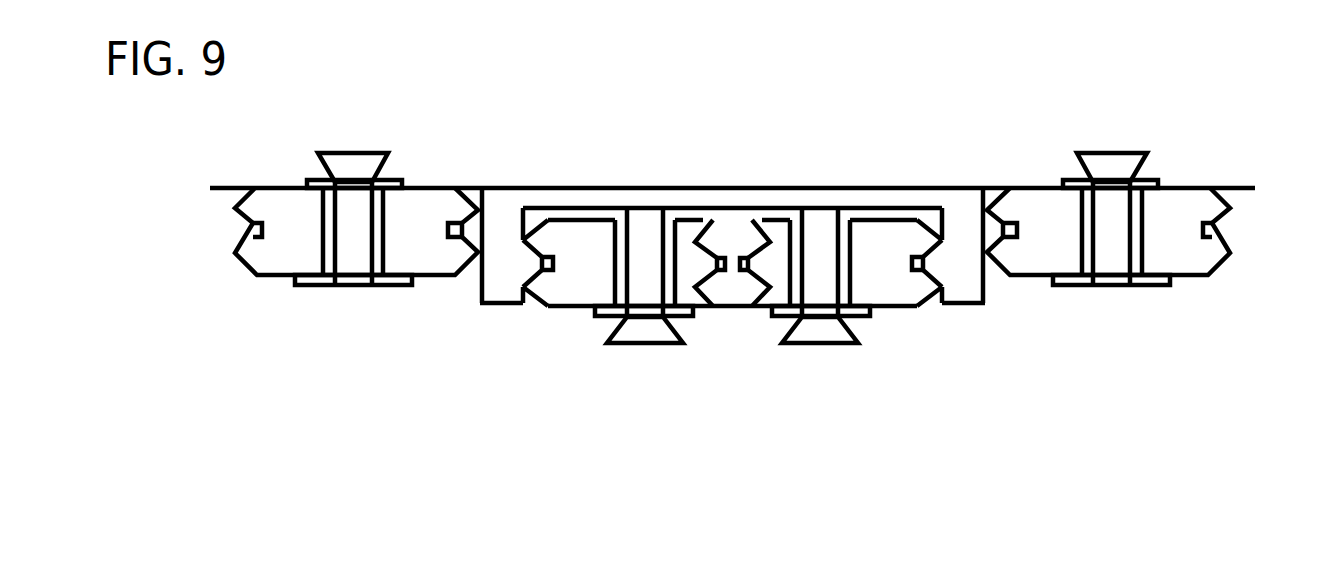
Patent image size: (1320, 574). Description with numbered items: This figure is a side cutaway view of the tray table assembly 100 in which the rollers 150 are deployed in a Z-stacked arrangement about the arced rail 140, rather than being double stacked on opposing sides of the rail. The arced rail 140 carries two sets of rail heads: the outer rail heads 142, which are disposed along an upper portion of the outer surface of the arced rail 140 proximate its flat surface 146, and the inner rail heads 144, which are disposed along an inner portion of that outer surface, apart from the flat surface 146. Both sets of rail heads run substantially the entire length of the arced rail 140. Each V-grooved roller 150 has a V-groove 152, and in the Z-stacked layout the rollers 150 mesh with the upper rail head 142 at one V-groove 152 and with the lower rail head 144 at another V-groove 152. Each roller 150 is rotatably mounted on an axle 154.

The assembly 100 is at (266, 134).
The arced rail 140 is at (812, 198).
The outer rail head 142 is at (478, 236).
The inner rail head 144 is at (537, 264).
The flat surface 146 is at (507, 292).
The roller 150 is at (1260, 304).
The V-groove 152 is at (190, 238).
The axle 154 is at (357, 152).